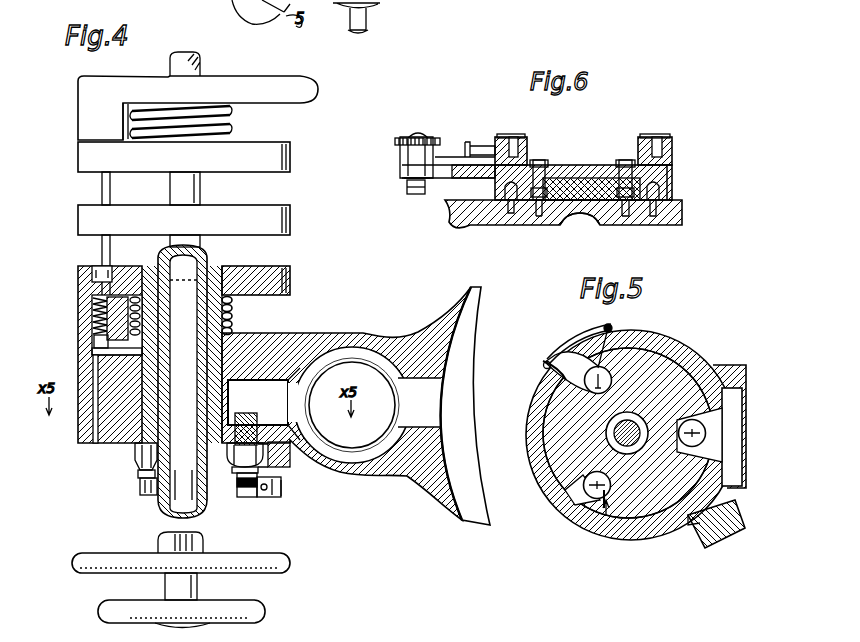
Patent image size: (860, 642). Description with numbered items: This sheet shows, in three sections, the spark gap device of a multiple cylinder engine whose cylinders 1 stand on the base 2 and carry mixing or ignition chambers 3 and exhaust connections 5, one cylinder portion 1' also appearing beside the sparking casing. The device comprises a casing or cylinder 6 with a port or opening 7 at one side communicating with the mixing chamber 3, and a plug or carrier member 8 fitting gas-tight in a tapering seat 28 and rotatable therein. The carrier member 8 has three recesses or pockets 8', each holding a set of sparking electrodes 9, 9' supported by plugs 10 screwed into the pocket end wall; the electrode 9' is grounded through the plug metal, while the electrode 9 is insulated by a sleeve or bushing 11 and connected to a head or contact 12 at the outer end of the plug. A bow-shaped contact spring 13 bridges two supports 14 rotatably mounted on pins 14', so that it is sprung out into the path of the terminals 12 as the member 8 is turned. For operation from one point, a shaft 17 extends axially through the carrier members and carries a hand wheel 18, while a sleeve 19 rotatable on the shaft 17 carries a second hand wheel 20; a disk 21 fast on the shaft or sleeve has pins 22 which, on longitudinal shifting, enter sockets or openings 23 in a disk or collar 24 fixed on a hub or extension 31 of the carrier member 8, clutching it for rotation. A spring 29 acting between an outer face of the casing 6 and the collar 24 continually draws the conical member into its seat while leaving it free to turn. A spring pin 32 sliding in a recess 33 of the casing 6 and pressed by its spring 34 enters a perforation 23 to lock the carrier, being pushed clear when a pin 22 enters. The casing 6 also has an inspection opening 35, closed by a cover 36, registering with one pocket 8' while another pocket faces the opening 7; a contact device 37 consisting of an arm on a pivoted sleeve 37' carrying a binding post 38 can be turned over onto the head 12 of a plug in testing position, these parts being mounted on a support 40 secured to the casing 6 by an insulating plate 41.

In FIG. 4, the cylinder 1 is at (465, 406).
In FIG. 5, the frame extension 1' is at (741, 437).
In FIG. 5, the base 2 is at (734, 422).
In FIG. 4, the mixing or ignition chamber 3 is at (348, 463).
In FIG. 6, the mixing or ignition chamber 3 is at (548, 215).
In FIG. 5, the exhaust connection 5 is at (712, 535).
In FIG. 4, the casing or cylinder 6 is at (218, 88).
In FIG. 6, the casing or cylinder 6 is at (452, 207).
In FIG. 5, the casing or cylinder 6 is at (540, 470).
In FIG. 4, the port, aperture or opening 7 is at (302, 410).
In FIG. 6, the port, aperture or opening 7 is at (585, 221).
In FIG. 4, the plug or carrier member 8 is at (146, 371).
In FIG. 5, the plug or carrier member 8 is at (635, 414).
In FIG. 5, the recess or pocket 8' is at (622, 436).
In FIG. 4, the sparking electrode 9 is at (251, 424).
In FIG. 5, the sparking electrode 9 is at (633, 451).
In FIG. 5, the sparking electrode 9' is at (579, 507).
In FIG. 4, the plug 10 is at (140, 465).
In FIG. 6, the plug 10 is at (432, 183).
In FIG. 5, the plug 10 is at (584, 380).
In FIG. 4, the sleeve or bushing 11 is at (198, 490).
In FIG. 4, the head or contact 12 is at (152, 497).
In FIG. 4, the contact spring 13 is at (266, 499).
In FIG. 6, the support 14 is at (587, 139).
In FIG. 4, the pin 14' is at (293, 515).
In FIG. 6, the pin 14' is at (582, 176).
In FIG. 4, the shaft 17 is at (200, 205).
In FIG. 4, the hand wheel 18 is at (265, 612).
In FIG. 4, the sleeve 19 is at (208, 249).
In FIG. 4, the hand wheel 20 is at (290, 563).
In FIG. 4, the disk 21 is at (290, 218).
In FIG. 4, the pin 22 is at (102, 195).
In FIG. 4, the socket or opening 23 is at (92, 283).
In FIG. 4, the disk or collar 24 is at (290, 160).
In FIG. 4, the seat 28 is at (262, 412).
In FIG. 4, the spring 29 is at (232, 118).
In FIG. 4, the hub or extension 31 is at (220, 280).
In FIG. 4, the spring pin 32 is at (107, 305).
In FIG. 4, the recess 33 is at (93, 322).
In FIG. 4, the spring 34 is at (94, 342).
In FIG. 5, the opening 35 is at (568, 352).
In FIG. 5, the cover 36 is at (552, 345).
In FIG. 6, the contact device 37 is at (447, 143).
In FIG. 6, the pivoted sleeve 37' is at (397, 146).
In FIG. 6, the binding post 38 is at (393, 192).
In FIG. 4, the support 40 is at (283, 495).
In FIG. 6, the support 40 is at (558, 182).
In FIG. 4, the insulating plate 41 is at (290, 468).
In FIG. 6, the insulating plate 41 is at (672, 190).